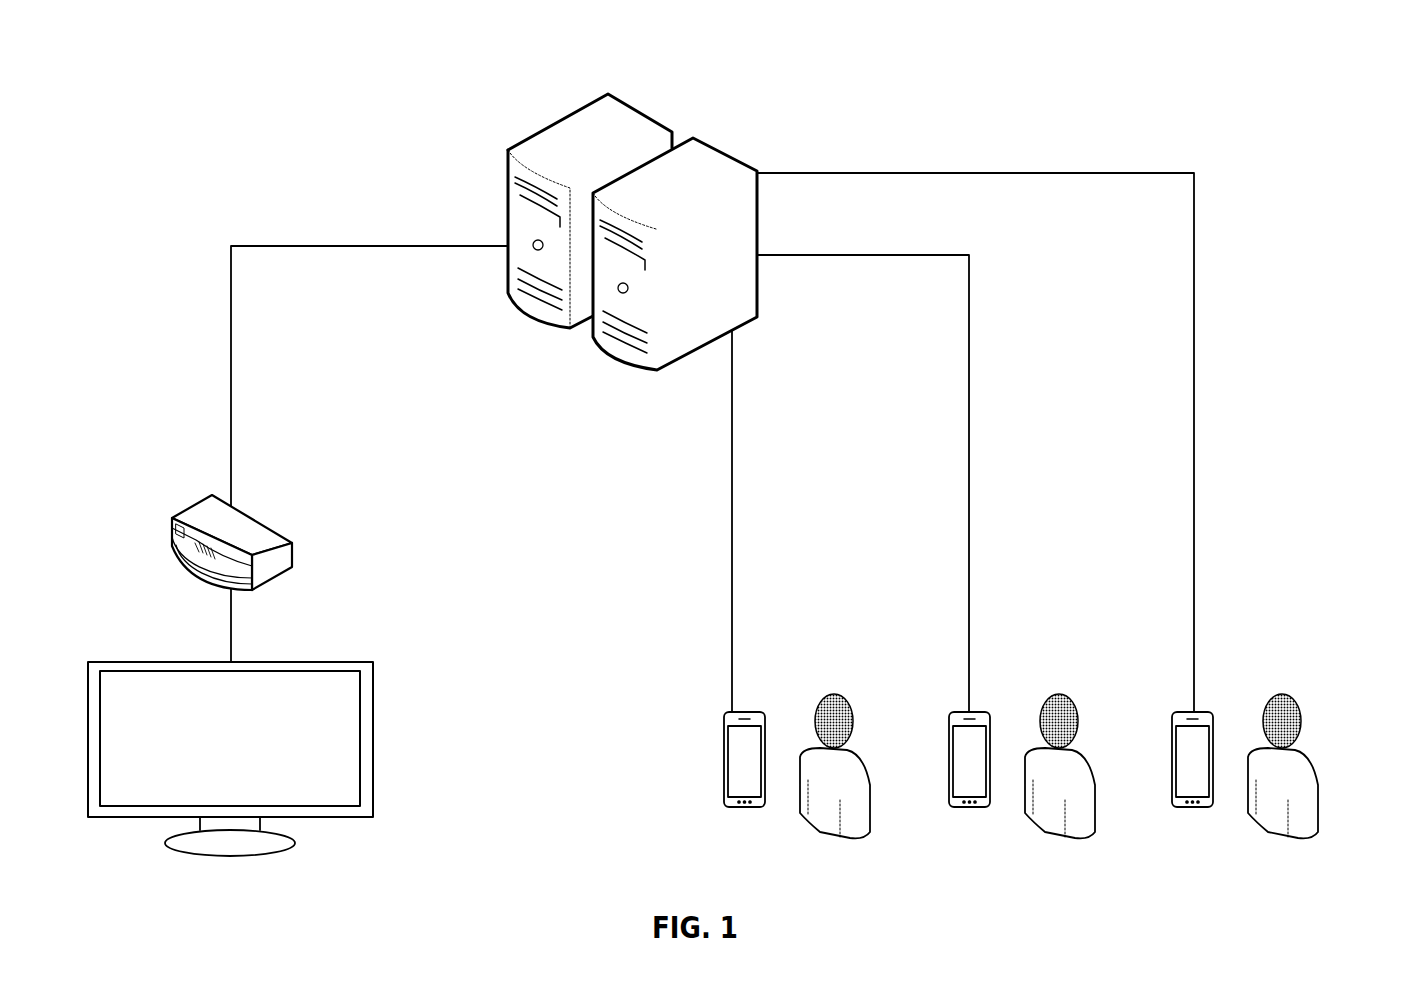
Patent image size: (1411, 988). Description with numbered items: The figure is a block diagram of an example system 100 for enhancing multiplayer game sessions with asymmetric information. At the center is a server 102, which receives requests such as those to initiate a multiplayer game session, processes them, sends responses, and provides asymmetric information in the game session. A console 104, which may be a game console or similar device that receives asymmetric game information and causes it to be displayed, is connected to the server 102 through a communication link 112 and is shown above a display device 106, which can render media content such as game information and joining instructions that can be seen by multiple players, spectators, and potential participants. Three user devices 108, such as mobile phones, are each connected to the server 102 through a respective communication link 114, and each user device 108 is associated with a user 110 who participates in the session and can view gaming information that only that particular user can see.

The system 100 is at (656, 33).
The server 102 is at (638, 108).
The console 104 is at (267, 523).
The display device 106 is at (335, 658).
The user device 108 is at (767, 717).
The user 110 is at (860, 837).
The communication link 112 is at (229, 358).
The communication link 114 is at (732, 440).